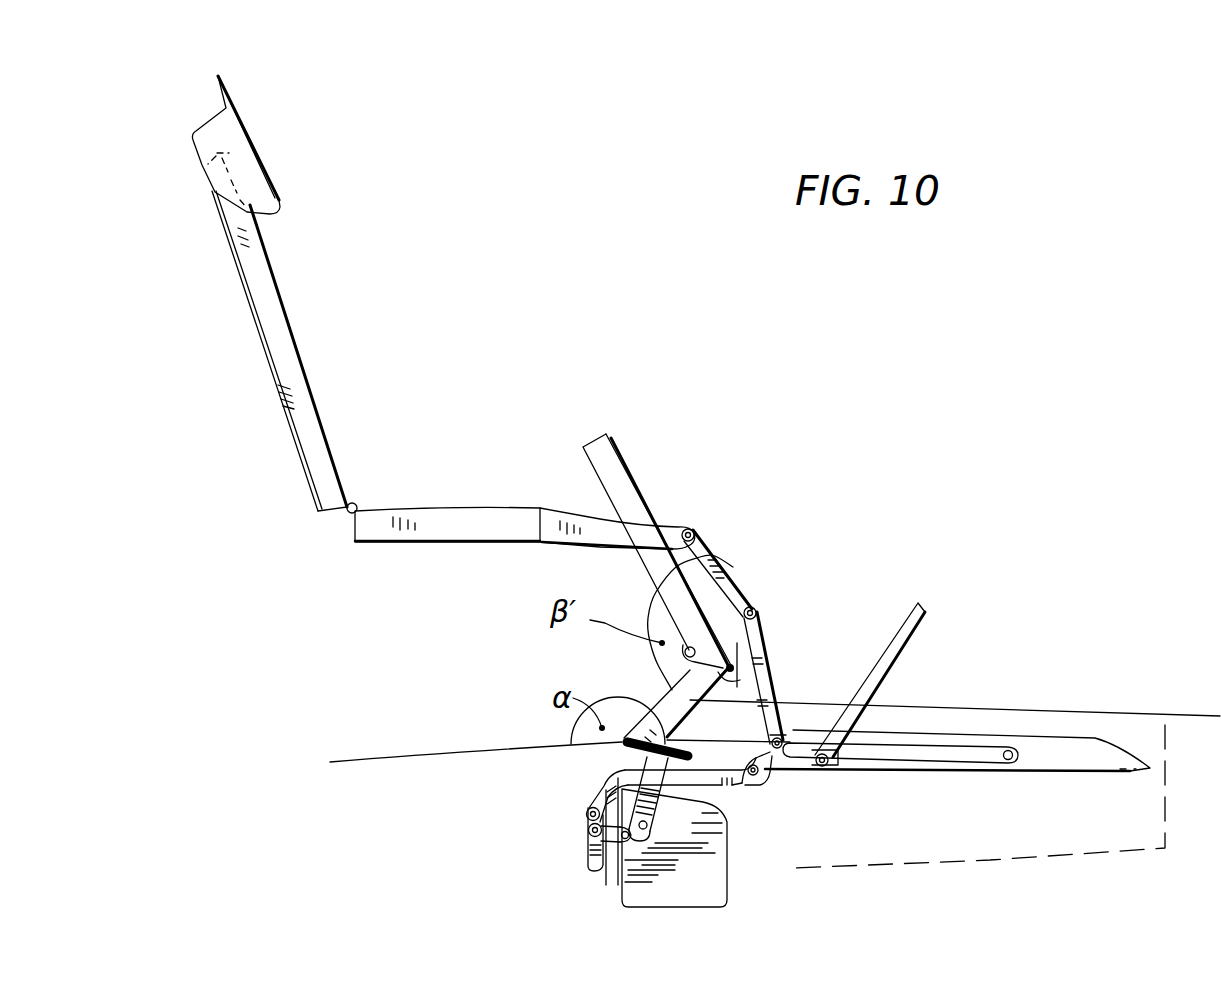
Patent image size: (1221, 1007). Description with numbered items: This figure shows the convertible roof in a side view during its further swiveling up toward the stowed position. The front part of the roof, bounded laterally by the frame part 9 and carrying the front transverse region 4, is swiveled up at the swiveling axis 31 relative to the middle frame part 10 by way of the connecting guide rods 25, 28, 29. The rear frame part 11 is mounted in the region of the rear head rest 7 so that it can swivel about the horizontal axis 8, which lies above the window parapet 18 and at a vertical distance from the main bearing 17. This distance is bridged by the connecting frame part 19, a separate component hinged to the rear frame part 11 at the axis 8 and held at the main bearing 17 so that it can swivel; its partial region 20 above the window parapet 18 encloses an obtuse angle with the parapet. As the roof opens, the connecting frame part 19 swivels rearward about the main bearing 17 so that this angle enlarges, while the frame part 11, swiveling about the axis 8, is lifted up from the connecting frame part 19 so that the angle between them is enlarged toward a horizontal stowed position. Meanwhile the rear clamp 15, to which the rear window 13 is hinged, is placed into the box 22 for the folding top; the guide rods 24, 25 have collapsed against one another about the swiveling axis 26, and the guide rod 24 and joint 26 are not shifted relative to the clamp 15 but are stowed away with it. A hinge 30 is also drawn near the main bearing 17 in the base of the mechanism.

The front transverse region 4 is at (260, 182).
The lateral frame part 9 is at (281, 322).
The swiveling axis 31 is at (354, 505).
The lateral frame part 10 is at (457, 520).
The connecting guide rod 29 is at (607, 533).
The rear frame part 11 is at (637, 503).
The rear head rest 7 is at (733, 567).
The connecting guide rod 28 is at (748, 605).
The horizontal axis 8 is at (733, 664).
The guide rod 25 is at (767, 677).
The partial region 20 is at (675, 712).
The window parapet 18 is at (392, 757).
The connecting frame part 19 is at (610, 758).
The hinge 30 is at (598, 867).
The main bearing 17 is at (634, 854).
The swiveling axis 26 is at (782, 775).
The guide rod 24 is at (932, 753).
The rear window 13 is at (905, 640).
The clamp 15 is at (1090, 763).
The box for the folding top 22 is at (1057, 824).